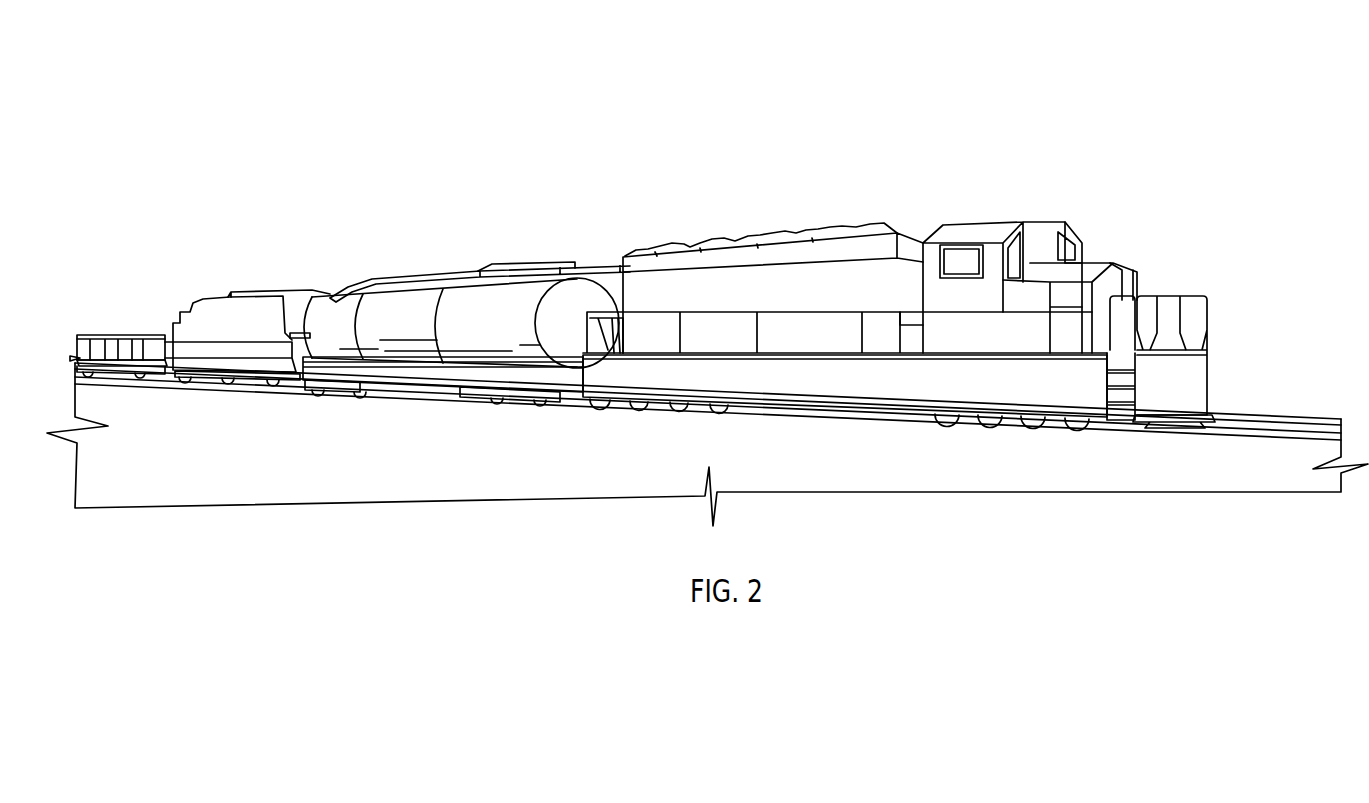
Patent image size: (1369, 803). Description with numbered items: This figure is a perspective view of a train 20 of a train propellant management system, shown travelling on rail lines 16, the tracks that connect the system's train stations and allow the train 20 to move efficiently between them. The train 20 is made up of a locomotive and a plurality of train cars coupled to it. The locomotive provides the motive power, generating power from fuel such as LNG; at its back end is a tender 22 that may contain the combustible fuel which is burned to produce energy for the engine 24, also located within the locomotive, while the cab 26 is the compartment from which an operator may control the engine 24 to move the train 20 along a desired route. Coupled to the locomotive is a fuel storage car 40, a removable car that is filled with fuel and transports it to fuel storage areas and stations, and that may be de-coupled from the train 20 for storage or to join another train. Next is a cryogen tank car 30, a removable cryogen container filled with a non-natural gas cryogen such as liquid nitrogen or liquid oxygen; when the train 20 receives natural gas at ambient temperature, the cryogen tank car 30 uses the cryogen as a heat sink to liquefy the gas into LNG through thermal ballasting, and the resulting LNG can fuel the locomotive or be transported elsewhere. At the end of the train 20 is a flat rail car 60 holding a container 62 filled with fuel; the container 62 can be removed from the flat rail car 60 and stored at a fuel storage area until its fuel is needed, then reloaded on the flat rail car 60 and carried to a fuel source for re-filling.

The rail lines 16 is at (1239, 442).
The train 20 is at (553, 136).
The tender 22 is at (725, 242).
The engine 24 is at (899, 272).
The cab 26 is at (860, 203).
The cryogen tank car 30 is at (255, 288).
The fuel storage car 40 is at (430, 265).
The flat rail car 60 is at (113, 327).
The container 62 is at (141, 343).